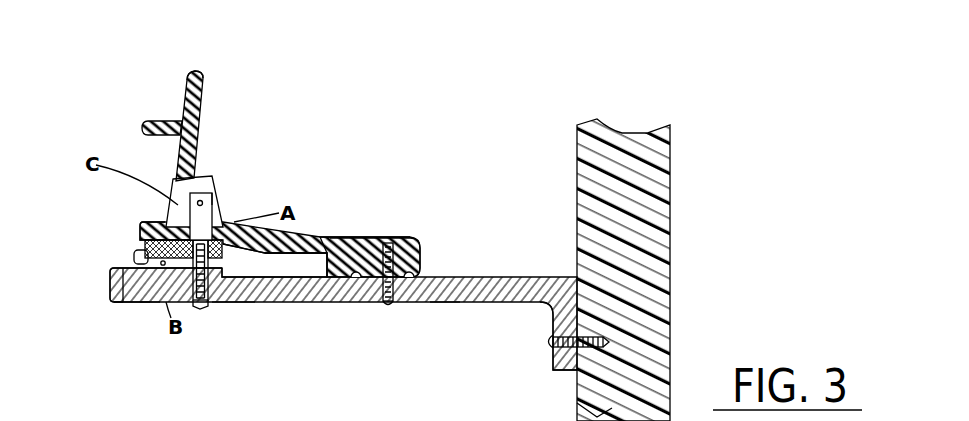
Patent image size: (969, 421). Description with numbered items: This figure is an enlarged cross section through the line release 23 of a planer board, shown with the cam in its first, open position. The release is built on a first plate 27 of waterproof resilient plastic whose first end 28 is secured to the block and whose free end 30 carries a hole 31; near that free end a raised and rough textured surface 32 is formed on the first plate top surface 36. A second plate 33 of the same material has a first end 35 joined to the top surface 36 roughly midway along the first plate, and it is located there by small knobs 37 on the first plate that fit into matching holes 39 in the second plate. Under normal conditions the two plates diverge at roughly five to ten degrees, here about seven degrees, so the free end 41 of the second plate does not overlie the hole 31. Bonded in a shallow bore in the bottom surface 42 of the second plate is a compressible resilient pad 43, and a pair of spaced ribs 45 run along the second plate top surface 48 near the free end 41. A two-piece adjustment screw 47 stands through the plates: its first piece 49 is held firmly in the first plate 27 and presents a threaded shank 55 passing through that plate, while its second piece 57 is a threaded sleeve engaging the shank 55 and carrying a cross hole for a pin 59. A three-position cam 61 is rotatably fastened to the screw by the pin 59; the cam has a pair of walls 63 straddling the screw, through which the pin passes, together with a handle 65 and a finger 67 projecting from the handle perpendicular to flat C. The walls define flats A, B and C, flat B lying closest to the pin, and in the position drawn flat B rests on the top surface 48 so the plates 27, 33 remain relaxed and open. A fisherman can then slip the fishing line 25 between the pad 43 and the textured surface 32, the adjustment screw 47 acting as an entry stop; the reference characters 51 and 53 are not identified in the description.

The line release 23 is at (507, 311).
The fishing line 25 is at (161, 262).
The first plate 27 is at (286, 312).
The first end 28 is at (550, 277).
The free end 30 is at (110, 292).
The hole 31 is at (127, 302).
The raised and rough textured surface 32 is at (123, 268).
The second plate 33 is at (366, 228).
The first end 35 is at (400, 238).
The top surface 36 is at (420, 258).
The small knobs 37 is at (336, 237).
The holes 39 is at (386, 250).
The free end 41 is at (147, 245).
The bottom surface 42 is at (243, 304).
The pad 43 is at (133, 256).
The spaced ribs 45 is at (157, 218).
The two-piece adjustment screw 47 is at (197, 313).
The top surface 48 is at (315, 240).
The first piece 49 is at (208, 313).
The screw hole 51 is at (222, 304).
The plate underside 53 is at (440, 303).
The threaded shank 55 is at (217, 258).
The second piece 57 is at (228, 214).
The pin 59 is at (219, 196).
The three-position cam 61 is at (210, 85).
The walls 63 is at (175, 183).
The handle 65 is at (188, 72).
The finger 67 is at (157, 120).